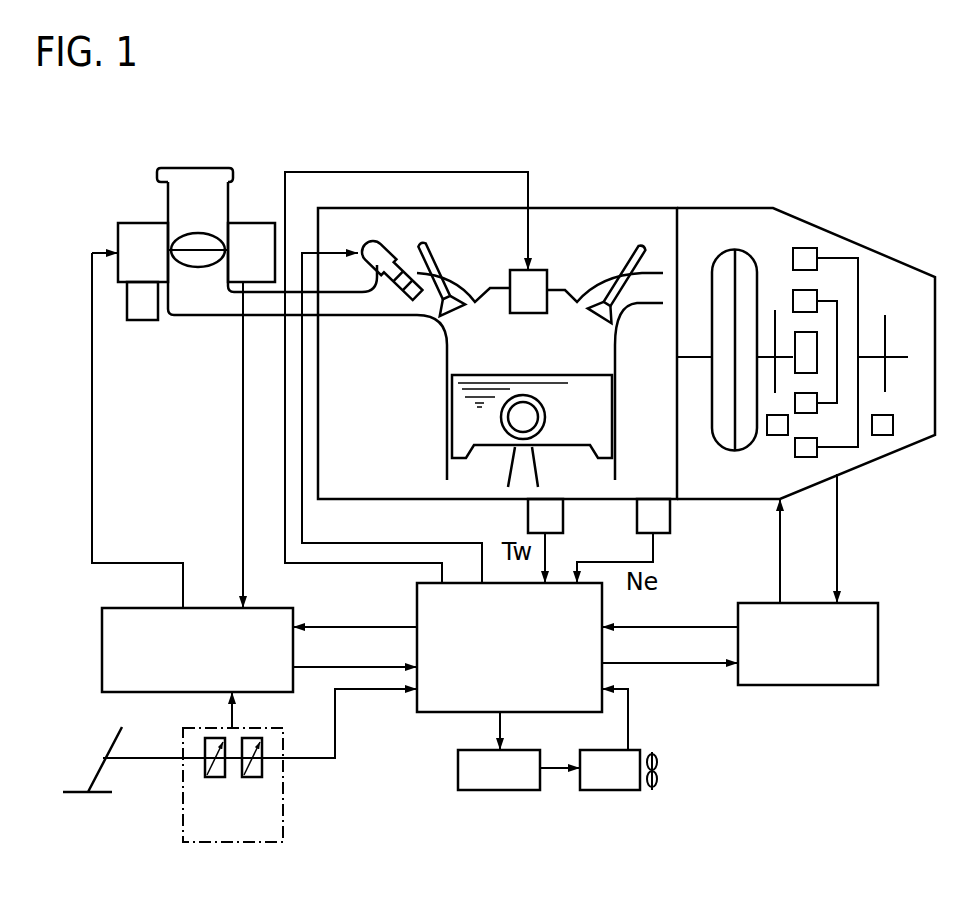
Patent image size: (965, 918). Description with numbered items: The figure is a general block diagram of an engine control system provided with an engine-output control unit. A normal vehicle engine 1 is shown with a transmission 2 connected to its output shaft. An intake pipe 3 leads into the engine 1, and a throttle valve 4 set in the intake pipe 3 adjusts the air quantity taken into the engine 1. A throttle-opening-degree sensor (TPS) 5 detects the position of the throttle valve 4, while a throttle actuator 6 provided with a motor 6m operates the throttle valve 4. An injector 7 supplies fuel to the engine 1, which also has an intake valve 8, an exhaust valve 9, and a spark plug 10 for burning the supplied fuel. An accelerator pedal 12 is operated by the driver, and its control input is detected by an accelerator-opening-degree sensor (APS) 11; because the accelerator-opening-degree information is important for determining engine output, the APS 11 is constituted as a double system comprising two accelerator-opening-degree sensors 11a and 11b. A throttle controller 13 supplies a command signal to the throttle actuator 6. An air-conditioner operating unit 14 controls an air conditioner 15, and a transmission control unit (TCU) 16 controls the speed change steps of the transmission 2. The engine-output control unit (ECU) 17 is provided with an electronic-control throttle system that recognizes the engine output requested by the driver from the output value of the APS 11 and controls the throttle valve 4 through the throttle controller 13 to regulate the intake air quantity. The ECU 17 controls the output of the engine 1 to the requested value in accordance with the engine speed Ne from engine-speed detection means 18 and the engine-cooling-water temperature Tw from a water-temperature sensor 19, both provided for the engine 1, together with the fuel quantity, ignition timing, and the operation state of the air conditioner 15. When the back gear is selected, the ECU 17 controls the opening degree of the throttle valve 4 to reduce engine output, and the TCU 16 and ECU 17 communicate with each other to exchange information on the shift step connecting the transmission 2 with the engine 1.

The engine 1 is at (600, 208).
The transmission 2 is at (728, 208).
The intake pipe 3 is at (167, 197).
The throttle valve 4 is at (200, 267).
The throttle-opening-degree sensor (TPS) 5 is at (247, 213).
The throttle actuator 6 is at (118, 237).
The motor 6m is at (127, 297).
The injector 7 is at (380, 238).
The intake valve 8 is at (435, 255).
The exhaust valve 9 is at (620, 303).
The spark plug 10 is at (543, 268).
The accelerator-opening-degree sensor (APS) 11 is at (232, 802).
The accelerator-opening-degree sensor 11a is at (205, 778).
The accelerator-opening-degree sensor 11b is at (262, 770).
The accelerator pedal 12 is at (107, 758).
The throttle controller 13 is at (102, 647).
The air-conditioner operating unit 14 is at (495, 790).
The air conditioner 15 is at (607, 790).
The transmission control unit (TCU) 16 is at (810, 685).
The engine-output control unit (ECU) 17 is at (417, 607).
The engine-speed detection means 18 is at (670, 520).
The water-temperature sensor 19 is at (563, 520).